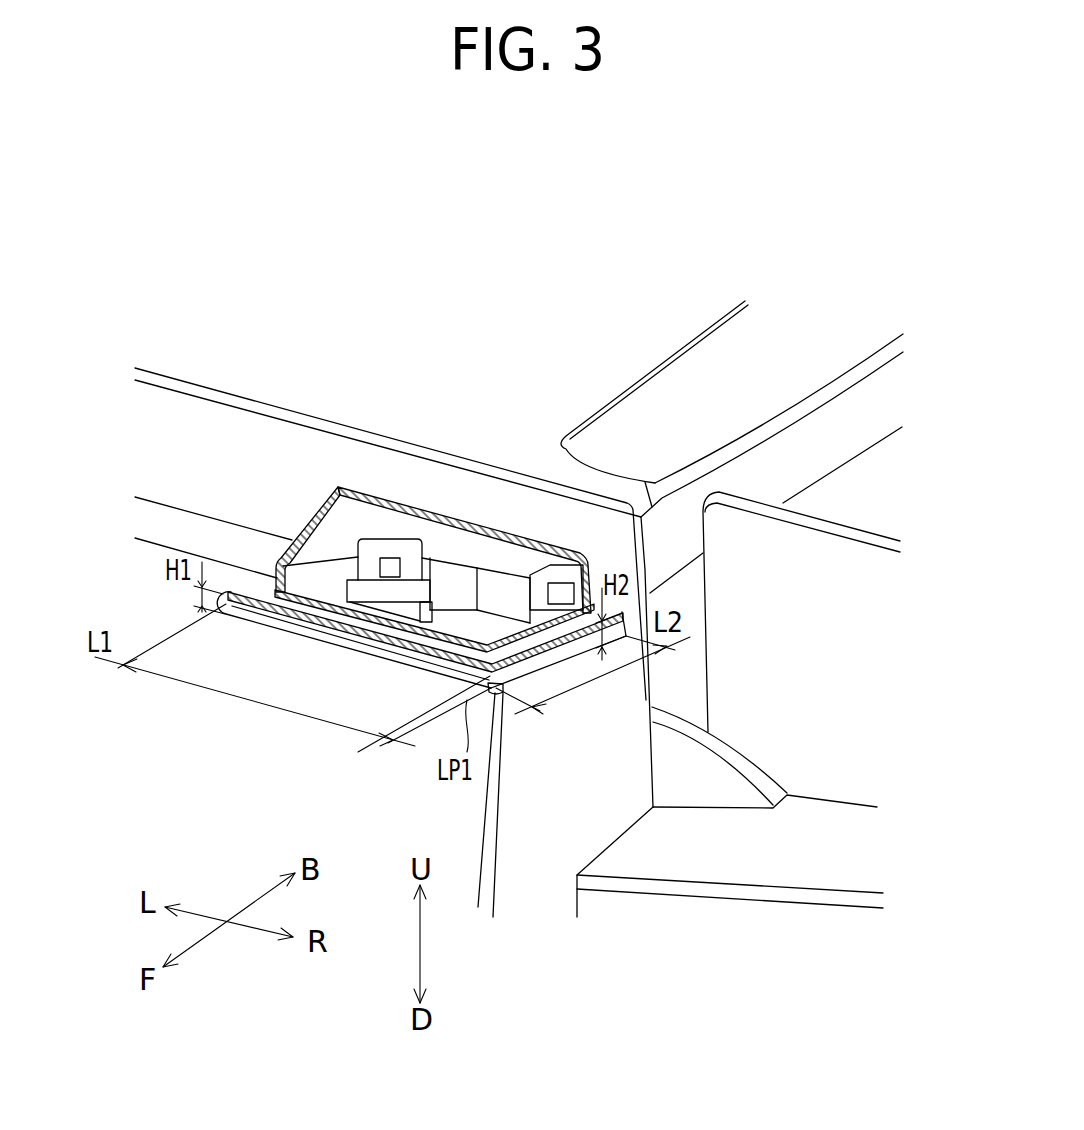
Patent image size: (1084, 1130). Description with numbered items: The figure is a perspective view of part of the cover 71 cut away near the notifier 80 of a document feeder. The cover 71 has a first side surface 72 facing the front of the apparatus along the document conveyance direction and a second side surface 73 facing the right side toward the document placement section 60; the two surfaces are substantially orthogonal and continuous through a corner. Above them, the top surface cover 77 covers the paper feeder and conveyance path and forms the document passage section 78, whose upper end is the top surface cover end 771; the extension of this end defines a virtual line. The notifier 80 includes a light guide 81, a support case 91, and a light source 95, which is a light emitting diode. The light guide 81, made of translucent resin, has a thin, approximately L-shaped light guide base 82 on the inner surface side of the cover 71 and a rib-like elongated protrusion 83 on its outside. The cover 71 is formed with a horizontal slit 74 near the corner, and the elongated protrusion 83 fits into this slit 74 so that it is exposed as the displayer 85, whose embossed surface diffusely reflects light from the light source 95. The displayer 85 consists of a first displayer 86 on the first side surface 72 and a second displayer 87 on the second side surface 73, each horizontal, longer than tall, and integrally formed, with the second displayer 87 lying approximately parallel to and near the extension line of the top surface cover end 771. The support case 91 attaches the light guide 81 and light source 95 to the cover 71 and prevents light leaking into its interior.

The document placement section 60 is at (809, 870).
The cover 71 is at (219, 405).
The first side surface 72 is at (431, 811).
The second side surface 73 is at (607, 811).
The slit 74 is at (421, 664).
The top surface cover 77 is at (561, 358).
The document passage section 78 is at (828, 507).
The top surface cover end 771 is at (890, 436).
The notifier 80 is at (414, 604).
The light guide 81 is at (330, 578).
The light guide base 82 is at (290, 548).
The elongated protrusion 83 is at (350, 612).
The displayer 85 is at (289, 618).
The first displayer 86 is at (247, 622).
The second displayer 87 is at (571, 660).
The support case 91 is at (490, 628).
The light source 95 is at (397, 539).